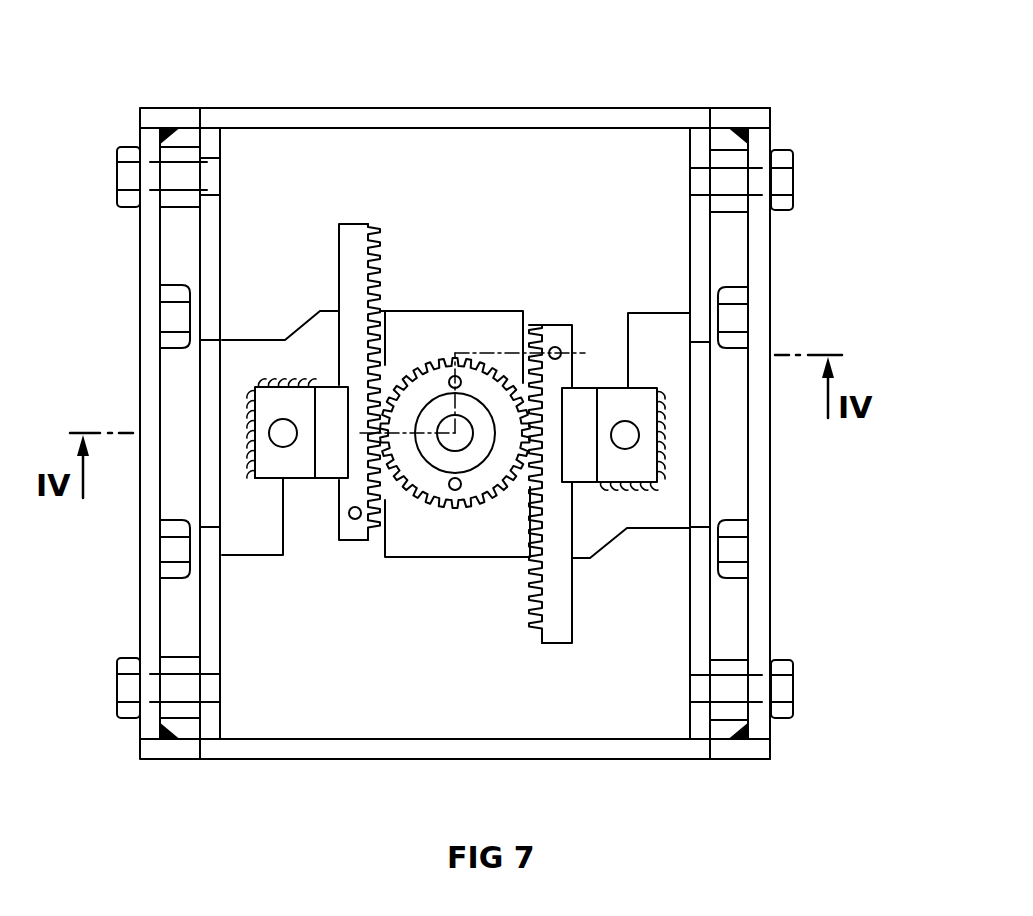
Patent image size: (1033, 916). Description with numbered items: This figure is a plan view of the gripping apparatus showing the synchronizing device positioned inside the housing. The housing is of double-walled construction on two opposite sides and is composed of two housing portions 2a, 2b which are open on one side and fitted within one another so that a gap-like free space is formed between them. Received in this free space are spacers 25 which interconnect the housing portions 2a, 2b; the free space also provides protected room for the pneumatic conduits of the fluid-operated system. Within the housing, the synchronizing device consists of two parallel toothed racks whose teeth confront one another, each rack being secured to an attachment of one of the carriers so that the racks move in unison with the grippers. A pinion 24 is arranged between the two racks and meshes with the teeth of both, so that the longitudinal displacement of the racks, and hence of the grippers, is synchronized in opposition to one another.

The housing portion 2a is at (760, 152).
The housing portion 2b is at (700, 150).
The pinion 24 is at (423, 377).
The spacer 25 is at (732, 690).